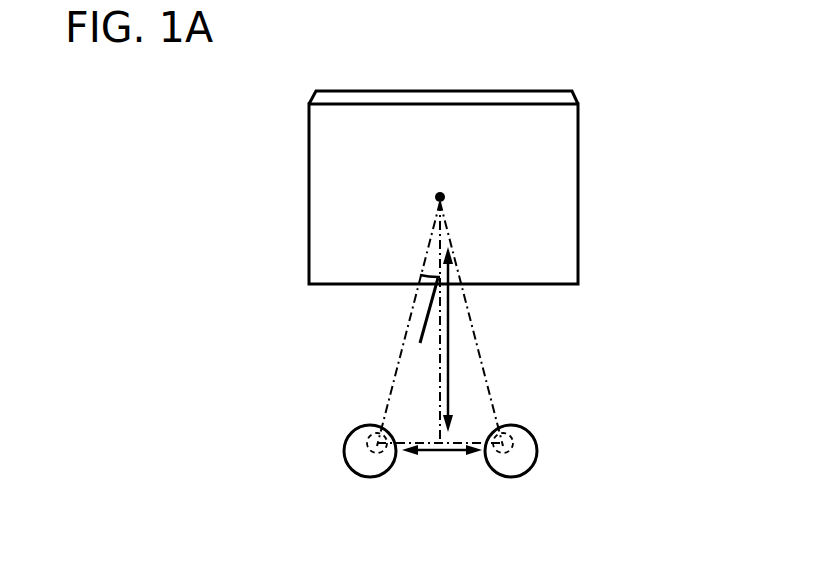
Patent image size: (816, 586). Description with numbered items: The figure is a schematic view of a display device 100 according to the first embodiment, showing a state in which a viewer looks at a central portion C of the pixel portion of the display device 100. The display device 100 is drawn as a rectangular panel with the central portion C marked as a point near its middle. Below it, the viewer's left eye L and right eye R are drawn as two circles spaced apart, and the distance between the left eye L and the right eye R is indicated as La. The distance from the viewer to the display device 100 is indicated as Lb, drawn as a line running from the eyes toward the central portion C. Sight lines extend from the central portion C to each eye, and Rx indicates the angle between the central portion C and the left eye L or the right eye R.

The display device 100 is at (570, 193).
The central portion C is at (440, 185).
The left eye L is at (370, 473).
The right eye R is at (511, 473).
The distance between the left eye and the right eye La is at (442, 464).
The distance between the viewer and the display device Lb is at (462, 339).
The angle between the central portion and the left eye or the right eye Rx is at (424, 325).